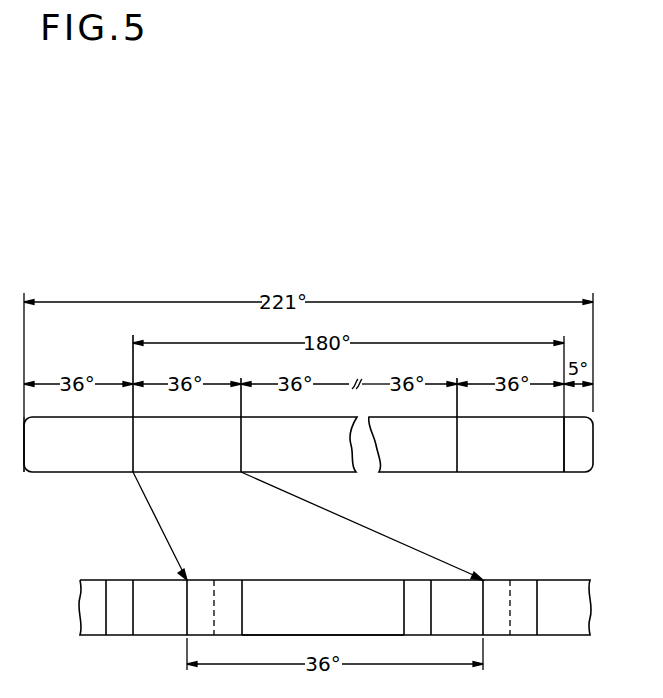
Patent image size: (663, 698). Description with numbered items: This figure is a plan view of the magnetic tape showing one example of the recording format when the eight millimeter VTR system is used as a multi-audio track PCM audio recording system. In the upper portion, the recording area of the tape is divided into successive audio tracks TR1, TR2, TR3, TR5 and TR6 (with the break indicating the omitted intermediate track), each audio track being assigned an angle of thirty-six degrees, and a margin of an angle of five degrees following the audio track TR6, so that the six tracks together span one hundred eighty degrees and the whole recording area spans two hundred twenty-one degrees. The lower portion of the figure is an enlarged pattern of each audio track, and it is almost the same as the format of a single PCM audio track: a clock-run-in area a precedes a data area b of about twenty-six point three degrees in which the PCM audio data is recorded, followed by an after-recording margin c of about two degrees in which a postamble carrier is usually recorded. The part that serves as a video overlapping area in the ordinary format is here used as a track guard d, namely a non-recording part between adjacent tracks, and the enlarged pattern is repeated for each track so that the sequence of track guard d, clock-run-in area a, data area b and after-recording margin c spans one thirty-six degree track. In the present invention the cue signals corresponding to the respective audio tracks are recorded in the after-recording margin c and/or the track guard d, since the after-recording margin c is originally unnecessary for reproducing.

The audio track TR1 is at (56, 444).
The audio track TR2 is at (165, 403).
The audio track TR3 is at (273, 425).
The audio track TR5 is at (425, 425).
The audio track TR6 is at (527, 444).
The clock-run-in area a is at (362, 607).
The data area b is at (323, 615).
The after-recording margin c is at (264, 607).
The track guard d is at (299, 607).